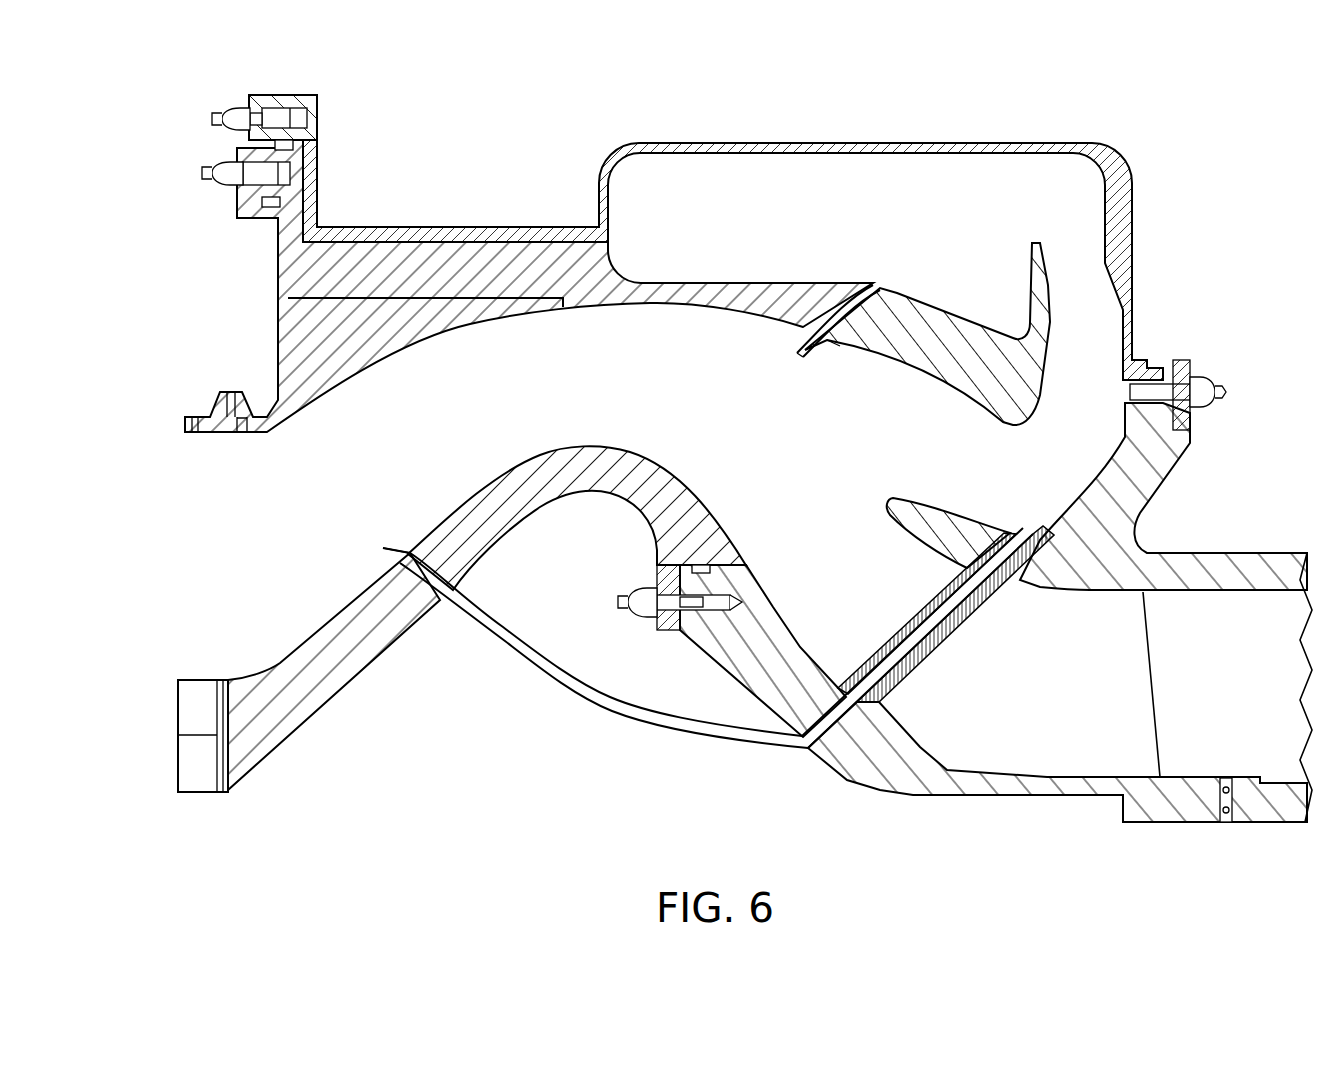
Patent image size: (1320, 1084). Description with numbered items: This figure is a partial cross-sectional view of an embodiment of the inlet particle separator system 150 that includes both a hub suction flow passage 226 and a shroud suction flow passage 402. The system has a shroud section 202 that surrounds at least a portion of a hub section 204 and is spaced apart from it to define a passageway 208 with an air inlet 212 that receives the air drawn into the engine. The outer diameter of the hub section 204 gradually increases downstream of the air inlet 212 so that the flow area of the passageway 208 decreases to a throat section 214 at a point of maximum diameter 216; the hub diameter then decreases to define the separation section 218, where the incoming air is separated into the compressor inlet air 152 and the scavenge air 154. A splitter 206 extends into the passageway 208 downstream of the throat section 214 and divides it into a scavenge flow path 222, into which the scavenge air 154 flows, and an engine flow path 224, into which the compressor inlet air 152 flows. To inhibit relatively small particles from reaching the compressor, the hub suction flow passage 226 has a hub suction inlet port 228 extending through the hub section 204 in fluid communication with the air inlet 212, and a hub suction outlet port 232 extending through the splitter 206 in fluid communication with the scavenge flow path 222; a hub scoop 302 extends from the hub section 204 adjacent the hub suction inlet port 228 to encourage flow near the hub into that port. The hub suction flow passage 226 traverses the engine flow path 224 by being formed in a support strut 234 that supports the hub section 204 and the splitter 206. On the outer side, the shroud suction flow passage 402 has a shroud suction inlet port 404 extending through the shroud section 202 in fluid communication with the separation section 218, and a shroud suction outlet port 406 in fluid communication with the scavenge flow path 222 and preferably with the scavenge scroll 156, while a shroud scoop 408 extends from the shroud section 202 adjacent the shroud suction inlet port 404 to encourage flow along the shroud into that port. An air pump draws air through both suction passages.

The inlet particle separator system 150 is at (490, 176).
The compressor inlet air 152 is at (782, 512).
The scavenge air 154 is at (955, 448).
The scavenge scroll 156 is at (905, 183).
The shroud section 202 is at (266, 351).
The hub section 204 is at (376, 687).
The splitter 206 is at (887, 503).
The passageway 208 is at (336, 480).
The air inlet 212 is at (216, 538).
The throat section 214 is at (514, 380).
The point of maximum diameter 216 is at (596, 447).
The separation section 218 is at (723, 434).
The scavenge flow path 222 is at (953, 505).
The engine flow path 224 is at (958, 708).
The hub suction flow passage 226 is at (590, 706).
The hub suction inlet port 228 is at (398, 562).
The hub suction outlet port 232 is at (1020, 528).
The support strut 234 is at (988, 622).
The hub scoop 302 is at (398, 547).
The shroud suction flow passage 402 is at (876, 316).
The shroud suction inlet port 404 is at (806, 337).
The shroud suction outlet port 406 is at (885, 288).
The shroud scoop 408 is at (830, 340).